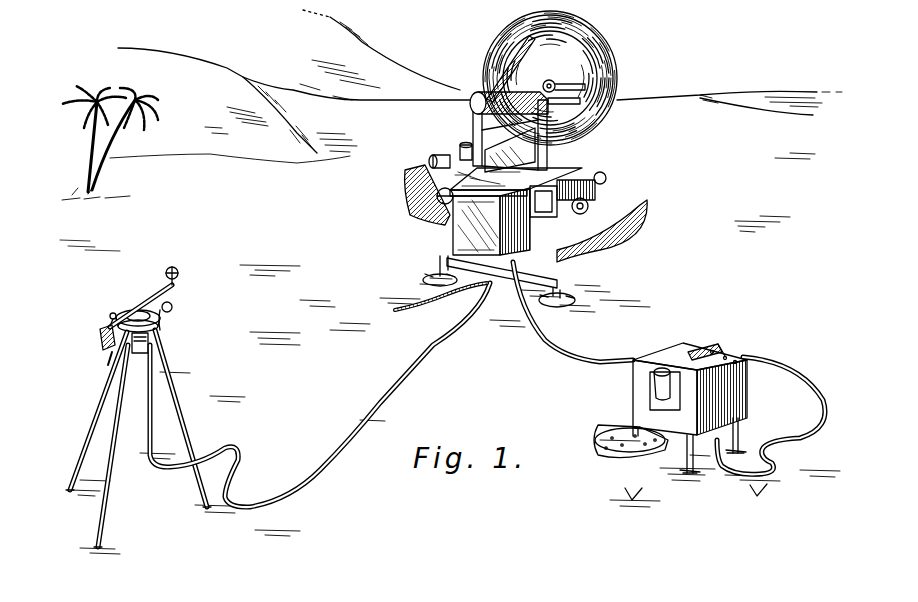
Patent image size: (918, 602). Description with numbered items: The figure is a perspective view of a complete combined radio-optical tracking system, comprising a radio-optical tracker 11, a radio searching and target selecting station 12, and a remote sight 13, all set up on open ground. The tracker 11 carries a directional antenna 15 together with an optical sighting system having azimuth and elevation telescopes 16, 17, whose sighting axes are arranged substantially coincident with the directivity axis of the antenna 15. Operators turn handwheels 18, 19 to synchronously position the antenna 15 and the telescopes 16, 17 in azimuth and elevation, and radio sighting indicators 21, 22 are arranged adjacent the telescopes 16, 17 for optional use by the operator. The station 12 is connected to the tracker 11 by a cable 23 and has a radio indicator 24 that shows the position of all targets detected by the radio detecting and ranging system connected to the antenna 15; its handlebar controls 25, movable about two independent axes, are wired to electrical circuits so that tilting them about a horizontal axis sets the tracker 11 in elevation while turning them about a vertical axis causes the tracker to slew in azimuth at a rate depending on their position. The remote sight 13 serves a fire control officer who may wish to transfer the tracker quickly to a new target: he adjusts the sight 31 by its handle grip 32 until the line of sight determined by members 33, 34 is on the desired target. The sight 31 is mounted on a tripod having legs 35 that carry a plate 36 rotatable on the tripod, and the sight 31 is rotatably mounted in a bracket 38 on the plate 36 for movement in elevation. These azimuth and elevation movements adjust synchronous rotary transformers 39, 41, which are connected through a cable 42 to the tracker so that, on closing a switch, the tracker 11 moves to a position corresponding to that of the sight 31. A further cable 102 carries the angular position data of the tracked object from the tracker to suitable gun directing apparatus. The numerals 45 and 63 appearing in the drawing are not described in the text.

The radio-optical tracker 11 is at (642, 141).
The radio searching and target selecting station 12 is at (761, 394).
The remote sight 13 is at (146, 387).
The directional antenna 15 is at (549, 80).
The azimuth telescope 16 is at (618, 170).
The elevation telescope 17 is at (462, 148).
The handwheel 18 is at (578, 213).
The handwheel 19 is at (420, 206).
The radio sighting indicator 21 is at (590, 204).
The radio sighting indicator 22 is at (416, 178).
The cable 23 is at (610, 356).
The radio indicator 24 is at (662, 350).
The handlebar controls 25 is at (705, 348).
The sight 31 is at (150, 290).
The handle grip 32 is at (102, 344).
The sighting member 33 is at (112, 314).
The sighting member 34 is at (174, 268).
The tripod legs 35 is at (122, 392).
The plate 36 is at (165, 303).
The bracket 38 is at (130, 305).
The synchronous rotary transformer 39 is at (150, 352).
The synchronous rotary transformer 41 is at (173, 308).
The cable 42 is at (302, 487).
The strut 45 is at (110, 356).
The hose reel 63 is at (620, 72).
The cable 102 is at (397, 312).